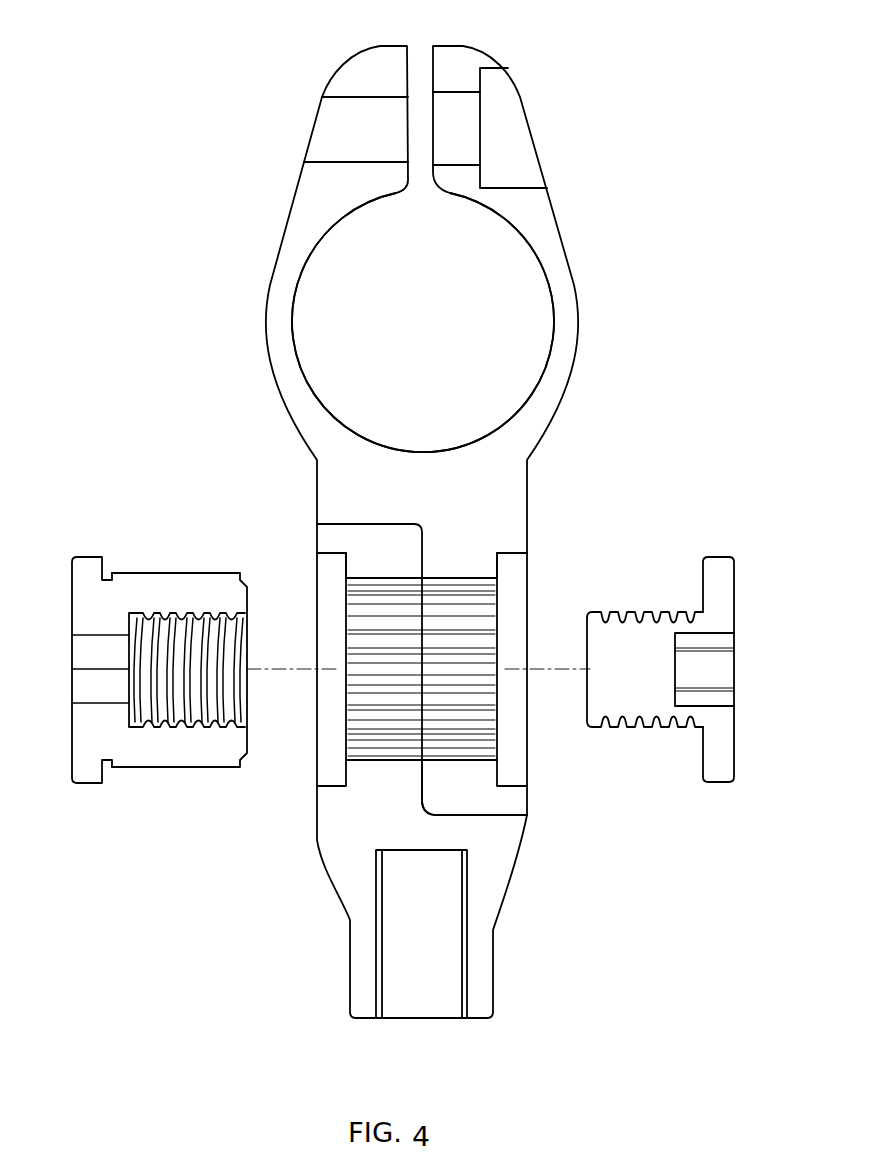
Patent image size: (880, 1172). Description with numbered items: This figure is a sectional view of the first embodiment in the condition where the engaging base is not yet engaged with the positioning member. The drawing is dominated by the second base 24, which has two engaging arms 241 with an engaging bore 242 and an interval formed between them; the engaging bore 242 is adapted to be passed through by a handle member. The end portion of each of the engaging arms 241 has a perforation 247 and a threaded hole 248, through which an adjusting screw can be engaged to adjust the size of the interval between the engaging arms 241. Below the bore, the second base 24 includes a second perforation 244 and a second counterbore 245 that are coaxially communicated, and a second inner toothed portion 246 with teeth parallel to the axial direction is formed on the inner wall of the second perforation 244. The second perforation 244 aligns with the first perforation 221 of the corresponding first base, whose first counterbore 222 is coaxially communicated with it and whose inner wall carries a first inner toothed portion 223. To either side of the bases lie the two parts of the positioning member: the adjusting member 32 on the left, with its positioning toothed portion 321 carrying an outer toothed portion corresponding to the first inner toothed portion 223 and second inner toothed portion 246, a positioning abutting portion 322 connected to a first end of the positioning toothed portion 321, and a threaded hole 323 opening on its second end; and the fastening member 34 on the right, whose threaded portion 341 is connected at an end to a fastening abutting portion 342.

The second base 24 is at (487, 60).
The engaging arms 241 is at (332, 188).
The engaging bore 242 is at (468, 327).
The second perforation 244 is at (463, 578).
The second counterbore 245 is at (527, 557).
The second inner toothed portion 246 is at (462, 738).
The perforation 247 is at (462, 118).
The threaded hole 248 is at (332, 120).
The first perforation 221 is at (377, 578).
The first counterbore 222 is at (333, 553).
The first inner toothed portion 223 is at (380, 738).
The adjusting member 32 is at (152, 757).
The positioning toothed portion 321 is at (160, 750).
The positioning abutting portion 322 is at (80, 783).
The threaded hole 323 is at (210, 713).
The fastening member 34 is at (667, 733).
The threaded portion 341 is at (637, 712).
The fastening abutting portion 342 is at (708, 709).